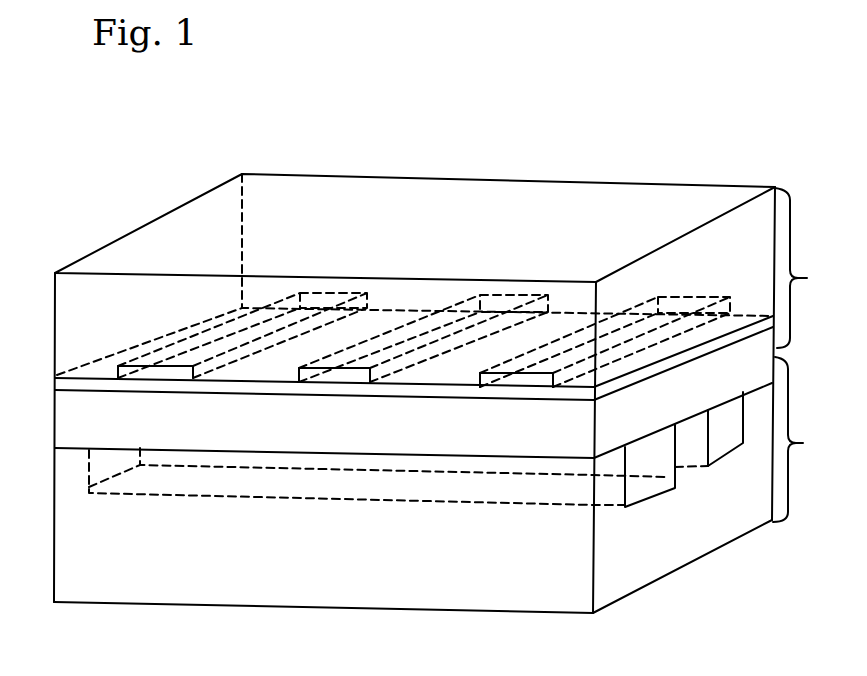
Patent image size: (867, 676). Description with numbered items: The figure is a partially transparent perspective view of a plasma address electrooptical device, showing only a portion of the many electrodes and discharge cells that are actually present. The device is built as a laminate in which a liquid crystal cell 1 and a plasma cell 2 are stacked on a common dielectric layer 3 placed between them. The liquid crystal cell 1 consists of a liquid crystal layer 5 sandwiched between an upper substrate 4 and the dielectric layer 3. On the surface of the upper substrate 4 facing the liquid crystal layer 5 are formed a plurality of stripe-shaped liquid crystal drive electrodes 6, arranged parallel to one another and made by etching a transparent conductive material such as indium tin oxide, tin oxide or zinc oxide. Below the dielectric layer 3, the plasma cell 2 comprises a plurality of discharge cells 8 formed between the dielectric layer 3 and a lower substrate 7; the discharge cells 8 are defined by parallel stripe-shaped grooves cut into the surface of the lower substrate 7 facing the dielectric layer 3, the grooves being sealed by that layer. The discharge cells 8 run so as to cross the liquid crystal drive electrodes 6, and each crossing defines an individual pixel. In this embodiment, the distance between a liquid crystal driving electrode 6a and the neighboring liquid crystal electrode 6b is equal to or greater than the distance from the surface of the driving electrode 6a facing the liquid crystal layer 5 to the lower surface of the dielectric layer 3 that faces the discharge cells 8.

The liquid crystal cell 1 is at (803, 268).
The plasma cell 2 is at (799, 439).
The dielectric layer 3 is at (78, 425).
The upper substrate 4 is at (207, 222).
The liquid crystal layer 5 is at (84, 385).
The liquid crystal drive electrodes 6 is at (424, 281).
The liquid crystal driving electrode 6a is at (345, 386).
The neighboring liquid crystal electrode 6b is at (513, 384).
The lower substrate 7 is at (615, 577).
The discharge cells 8 is at (643, 467).